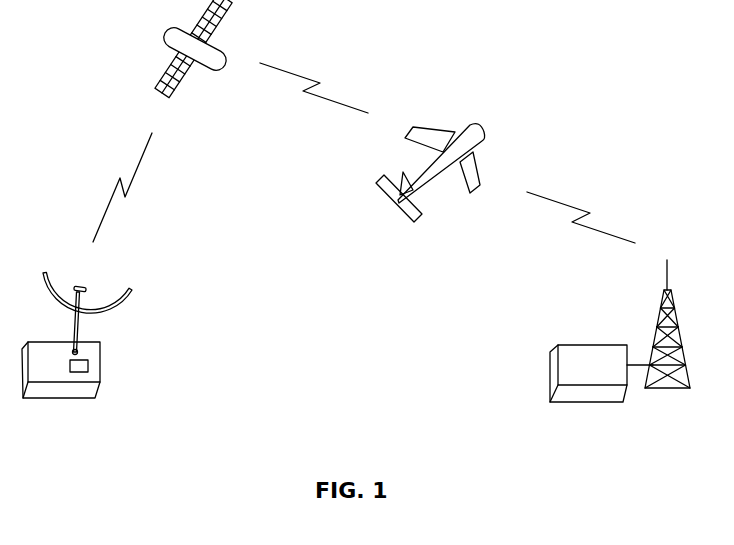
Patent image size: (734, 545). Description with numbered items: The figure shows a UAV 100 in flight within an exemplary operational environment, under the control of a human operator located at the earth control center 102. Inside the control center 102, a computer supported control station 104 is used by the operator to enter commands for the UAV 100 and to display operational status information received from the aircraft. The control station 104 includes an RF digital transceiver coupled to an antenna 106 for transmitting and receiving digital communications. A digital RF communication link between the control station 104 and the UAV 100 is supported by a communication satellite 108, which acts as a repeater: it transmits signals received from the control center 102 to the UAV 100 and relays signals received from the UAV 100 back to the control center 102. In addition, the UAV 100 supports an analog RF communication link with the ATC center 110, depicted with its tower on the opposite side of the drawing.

The UAV 100 is at (488, 129).
The earth control center 102 is at (101, 357).
The control station 104 is at (89, 367).
The antenna 106 is at (115, 300).
The communication satellite 108 is at (222, 47).
The ATC center 110 is at (578, 344).